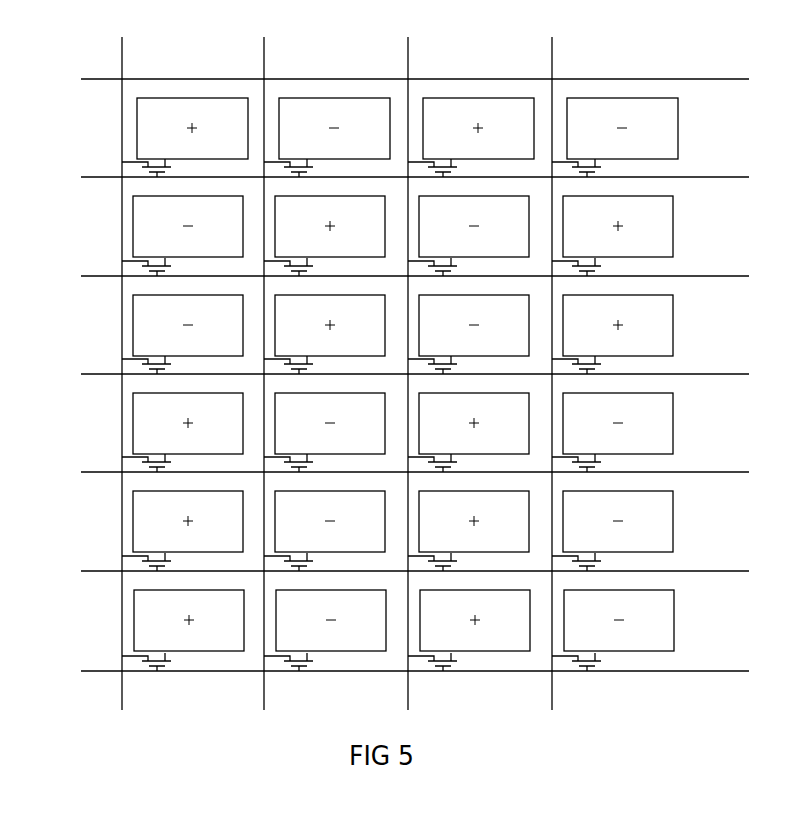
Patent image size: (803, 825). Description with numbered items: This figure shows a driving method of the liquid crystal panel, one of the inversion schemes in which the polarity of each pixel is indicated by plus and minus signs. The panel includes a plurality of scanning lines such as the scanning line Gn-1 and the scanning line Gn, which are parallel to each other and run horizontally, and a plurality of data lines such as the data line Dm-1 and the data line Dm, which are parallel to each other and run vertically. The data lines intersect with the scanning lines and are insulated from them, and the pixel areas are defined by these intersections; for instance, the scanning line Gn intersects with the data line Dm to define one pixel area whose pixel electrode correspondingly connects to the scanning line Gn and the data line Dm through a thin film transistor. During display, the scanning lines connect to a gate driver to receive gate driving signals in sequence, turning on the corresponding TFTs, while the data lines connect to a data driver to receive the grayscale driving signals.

The scanning line Gn-1 is at (389, 81).
The scanning line Gn is at (392, 181).
The data line Dm-1 is at (121, 356).
The data line Dm is at (268, 356).